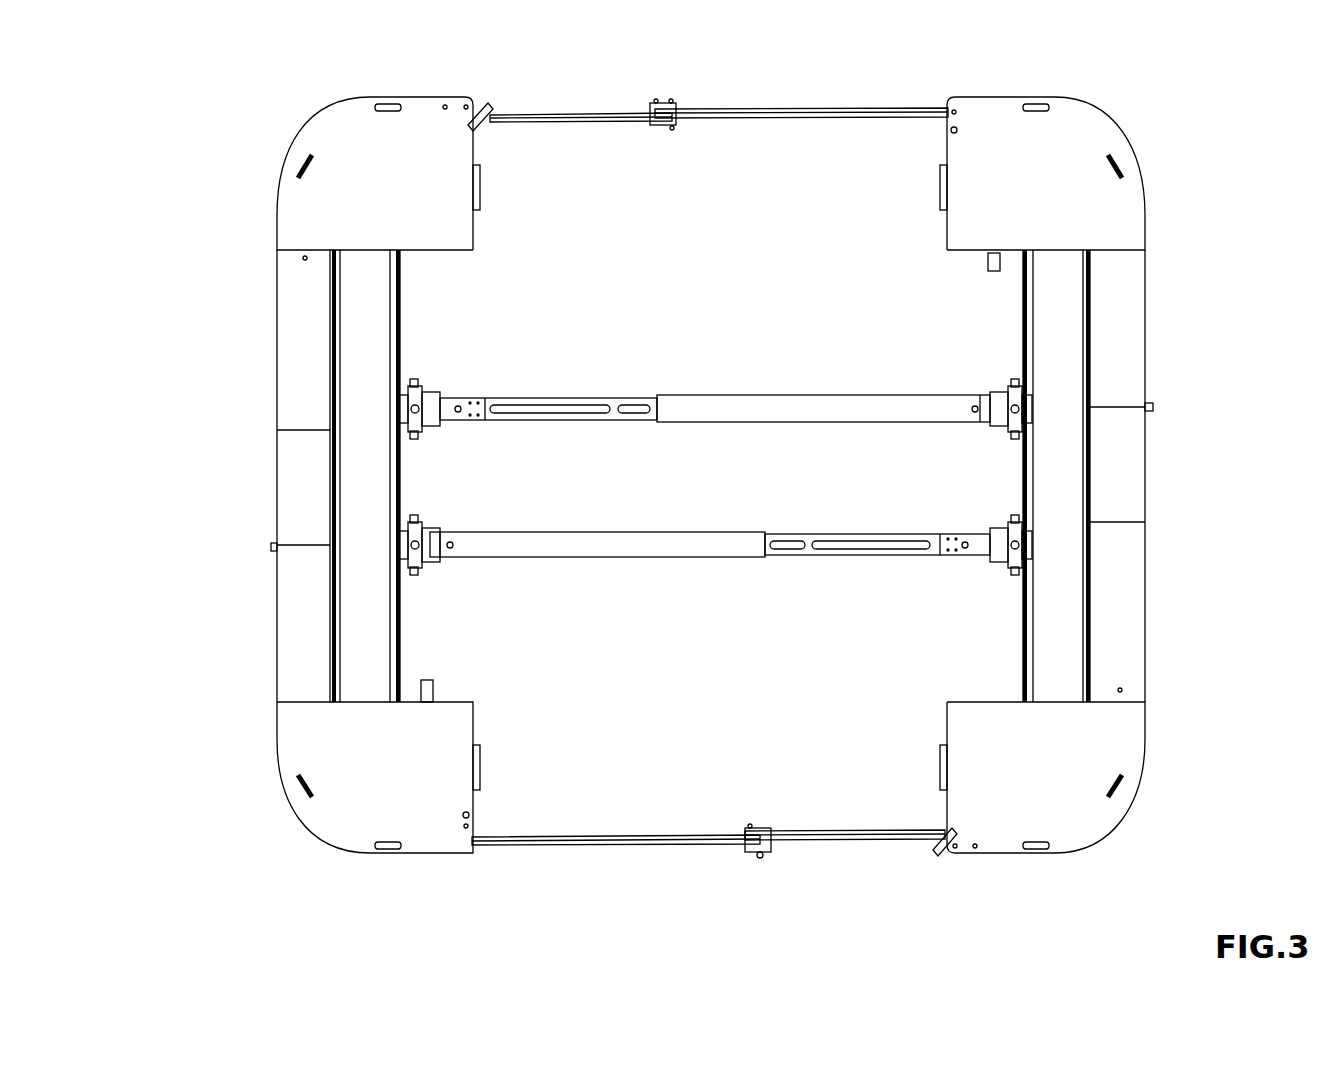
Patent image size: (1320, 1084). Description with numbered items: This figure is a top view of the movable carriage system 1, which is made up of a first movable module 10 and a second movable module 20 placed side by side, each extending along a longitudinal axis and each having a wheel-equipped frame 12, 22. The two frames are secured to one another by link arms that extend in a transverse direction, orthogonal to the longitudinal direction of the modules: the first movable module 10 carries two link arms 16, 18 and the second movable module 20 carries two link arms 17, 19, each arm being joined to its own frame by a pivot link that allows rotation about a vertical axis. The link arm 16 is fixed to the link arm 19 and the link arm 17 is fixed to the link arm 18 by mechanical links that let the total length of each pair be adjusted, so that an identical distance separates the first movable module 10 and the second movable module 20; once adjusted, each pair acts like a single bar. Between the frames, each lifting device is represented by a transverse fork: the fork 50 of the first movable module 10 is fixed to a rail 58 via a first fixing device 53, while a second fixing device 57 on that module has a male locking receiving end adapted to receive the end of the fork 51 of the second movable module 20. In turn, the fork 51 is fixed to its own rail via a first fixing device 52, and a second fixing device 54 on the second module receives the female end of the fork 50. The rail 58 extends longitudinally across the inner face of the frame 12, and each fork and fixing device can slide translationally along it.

The movable carriage system 1 is at (185, 152).
The first movable module 10 is at (1101, 476).
The frame 12 is at (1122, 363).
The first link arm 16 is at (828, 105).
The second link arm 17 is at (592, 846).
The link arm 18 is at (828, 846).
The link arm 19 is at (592, 112).
The second movable module 20 is at (235, 492).
The frame 22 is at (298, 362).
The fork 50 is at (738, 568).
The fork 51 is at (632, 390).
The first fixing device 52 is at (428, 385).
The first fixing device 53 is at (997, 568).
The second fixing device 54 is at (425, 568).
The second fixing device 57 is at (995, 392).
The rail 58 is at (1020, 312).